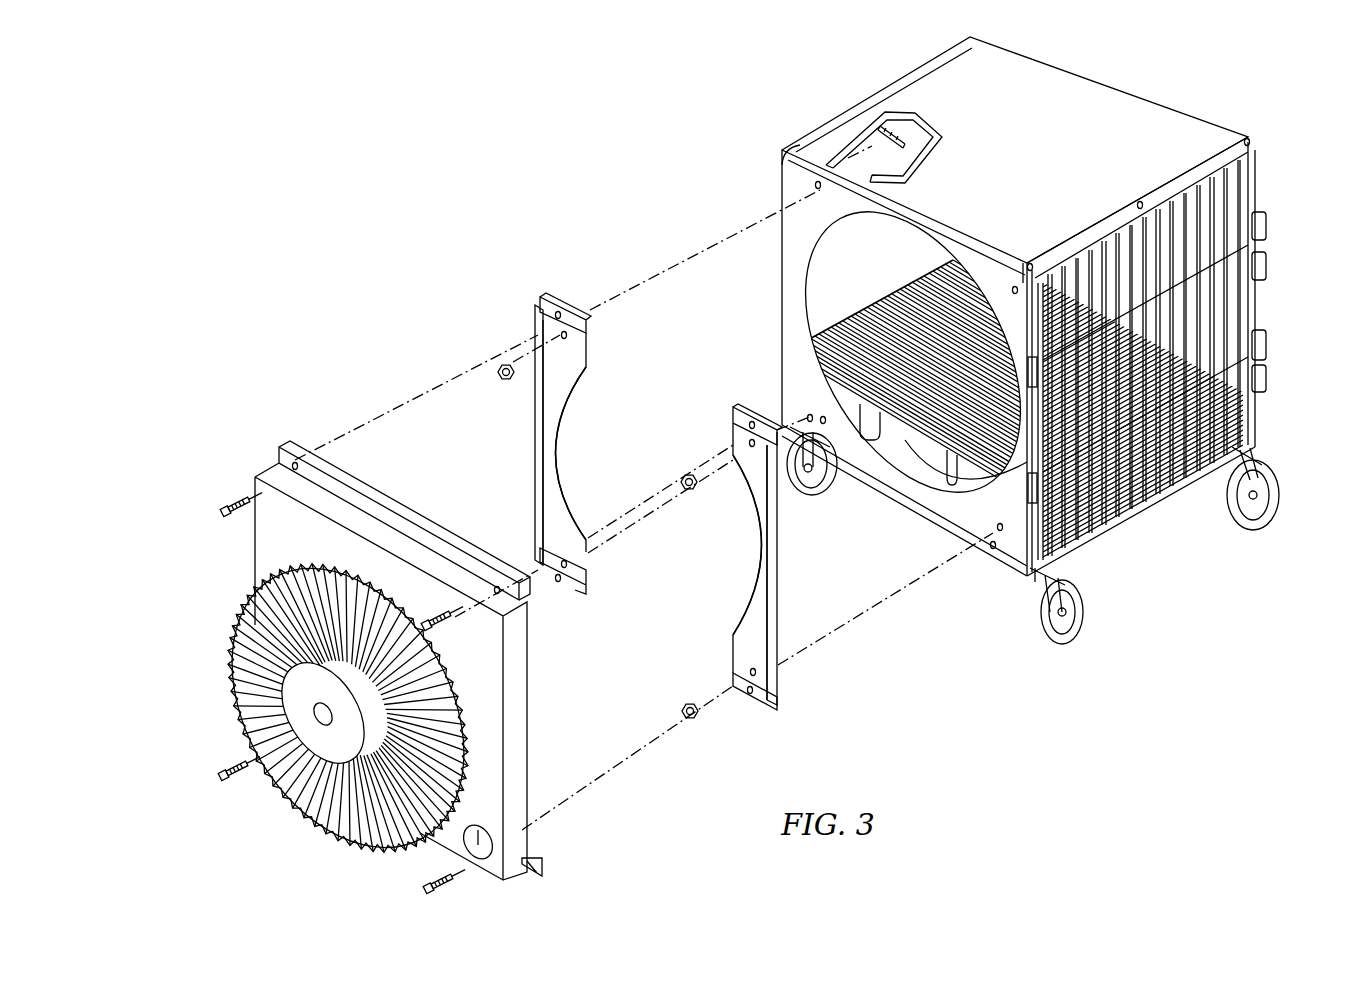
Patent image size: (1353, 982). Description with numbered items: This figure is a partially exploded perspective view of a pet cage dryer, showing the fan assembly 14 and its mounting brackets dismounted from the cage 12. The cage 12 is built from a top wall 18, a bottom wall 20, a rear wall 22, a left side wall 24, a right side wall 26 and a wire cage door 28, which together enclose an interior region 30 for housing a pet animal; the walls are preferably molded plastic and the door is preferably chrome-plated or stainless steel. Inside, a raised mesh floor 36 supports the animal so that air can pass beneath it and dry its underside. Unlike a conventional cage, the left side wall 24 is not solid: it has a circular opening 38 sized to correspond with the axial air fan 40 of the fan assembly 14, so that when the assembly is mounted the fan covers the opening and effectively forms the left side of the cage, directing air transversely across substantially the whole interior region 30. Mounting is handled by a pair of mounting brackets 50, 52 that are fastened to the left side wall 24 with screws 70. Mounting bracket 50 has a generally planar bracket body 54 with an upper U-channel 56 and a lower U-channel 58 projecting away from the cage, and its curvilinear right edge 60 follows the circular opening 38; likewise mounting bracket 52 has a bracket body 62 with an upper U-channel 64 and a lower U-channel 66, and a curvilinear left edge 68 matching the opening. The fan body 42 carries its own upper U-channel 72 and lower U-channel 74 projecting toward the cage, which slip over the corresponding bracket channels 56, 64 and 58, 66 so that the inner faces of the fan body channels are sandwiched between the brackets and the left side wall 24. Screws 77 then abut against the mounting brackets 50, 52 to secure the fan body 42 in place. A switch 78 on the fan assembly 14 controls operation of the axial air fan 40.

The cage 12 is at (1155, 108).
The fan assembly 14 is at (228, 662).
The top wall 18 is at (1058, 98).
The bottom wall 20 is at (1150, 532).
The rear wall 22 is at (828, 118).
The left side wall 24 is at (977, 515).
The right side wall 26 is at (1215, 300).
The wire cage door 28 is at (1205, 228).
The interior region 30 is at (1203, 345).
The raised mesh floor 36 is at (925, 440).
The circular opening 38 is at (838, 288).
The axial air fan 40 is at (325, 830).
The fan body 42 is at (265, 520).
The mounting bracket 50 is at (604, 458).
The mounting bracket 52 is at (786, 556).
The bracket body 54 is at (565, 355).
The upper U-channel 56 is at (575, 303).
The lower U-channel 58 is at (578, 598).
The curvilinear right edge 60 is at (563, 460).
The bracket body 62 is at (765, 640).
The upper U-channel 64 is at (752, 412).
The lower U-channel 66 is at (767, 710).
The curvilinear left edge 68 is at (756, 512).
The screws 70 is at (880, 135).
The upper U-channel 72 is at (308, 450).
The lower U-channel 74 is at (545, 877).
The screws 77 is at (228, 506).
The switch 78 is at (475, 826).